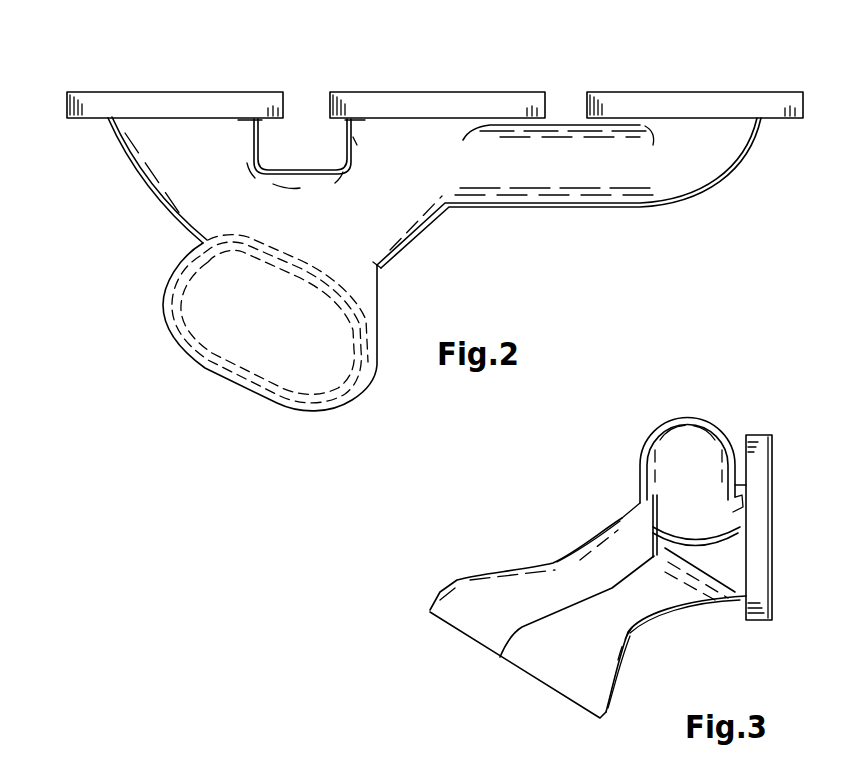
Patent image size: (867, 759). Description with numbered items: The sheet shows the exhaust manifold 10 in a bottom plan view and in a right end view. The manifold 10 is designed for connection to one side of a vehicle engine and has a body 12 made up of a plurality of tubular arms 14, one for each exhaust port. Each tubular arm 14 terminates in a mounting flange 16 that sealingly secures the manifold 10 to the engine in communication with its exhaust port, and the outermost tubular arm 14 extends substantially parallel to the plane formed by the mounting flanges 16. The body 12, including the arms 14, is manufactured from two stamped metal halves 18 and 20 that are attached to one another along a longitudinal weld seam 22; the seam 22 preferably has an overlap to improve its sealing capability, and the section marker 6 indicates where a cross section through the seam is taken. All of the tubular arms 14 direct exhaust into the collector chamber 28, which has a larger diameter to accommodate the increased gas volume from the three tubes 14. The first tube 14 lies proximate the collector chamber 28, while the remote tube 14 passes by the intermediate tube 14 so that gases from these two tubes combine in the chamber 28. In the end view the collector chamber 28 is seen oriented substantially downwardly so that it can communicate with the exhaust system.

In FIG. 2, the section line 6- 6 is at (310, 192).
In FIG. 2, the exhaust manifold 10 is at (84, 221).
In FIG. 3, the exhaust manifold 10 is at (712, 385).
In FIG. 2, the body 12 is at (368, 254).
In FIG. 3, the body 12 is at (488, 577).
In FIG. 2, the tubular arm 14 is at (150, 148).
In FIG. 3, the tubular arm 14 is at (716, 447).
In FIG. 2, the mounting flange 16 is at (94, 102).
In FIG. 3, the mounting flange 16 is at (757, 456).
In FIG. 3, the stamped half 18 is at (593, 528).
In FIG. 3, the stamped half 20 is at (660, 612).
In FIG. 2, the longitudinal weld seam 22 is at (140, 187).
In FIG. 3, the longitudinal weld seam 22 is at (698, 573).
In FIG. 2, the collector chamber 28 is at (251, 333).